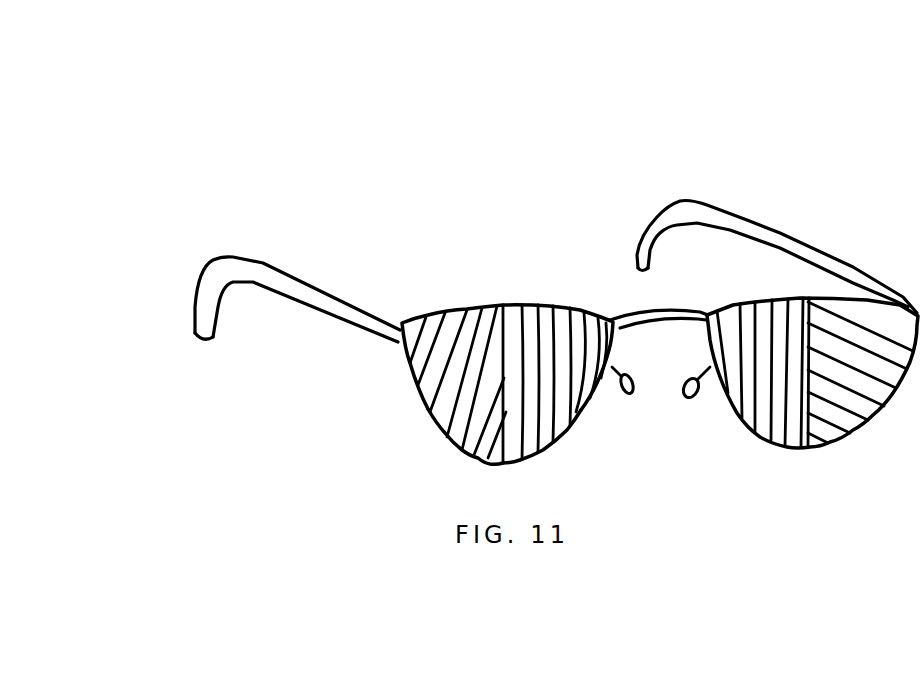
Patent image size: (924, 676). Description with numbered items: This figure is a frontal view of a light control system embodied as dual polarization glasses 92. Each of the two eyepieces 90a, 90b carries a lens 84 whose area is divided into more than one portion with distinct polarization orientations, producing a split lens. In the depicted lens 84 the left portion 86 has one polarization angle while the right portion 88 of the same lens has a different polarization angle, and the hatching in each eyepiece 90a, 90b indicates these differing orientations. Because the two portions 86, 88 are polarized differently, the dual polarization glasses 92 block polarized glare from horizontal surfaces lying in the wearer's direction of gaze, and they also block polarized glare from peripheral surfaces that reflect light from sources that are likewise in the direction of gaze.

The dual polarization glasses 92 is at (277, 125).
The lens 84 is at (424, 393).
The left portion of the lens 86 is at (437, 442).
The right portion of the lens 88 is at (587, 422).
The eyepiece 90a is at (496, 305).
The eyepiece 90b is at (777, 298).